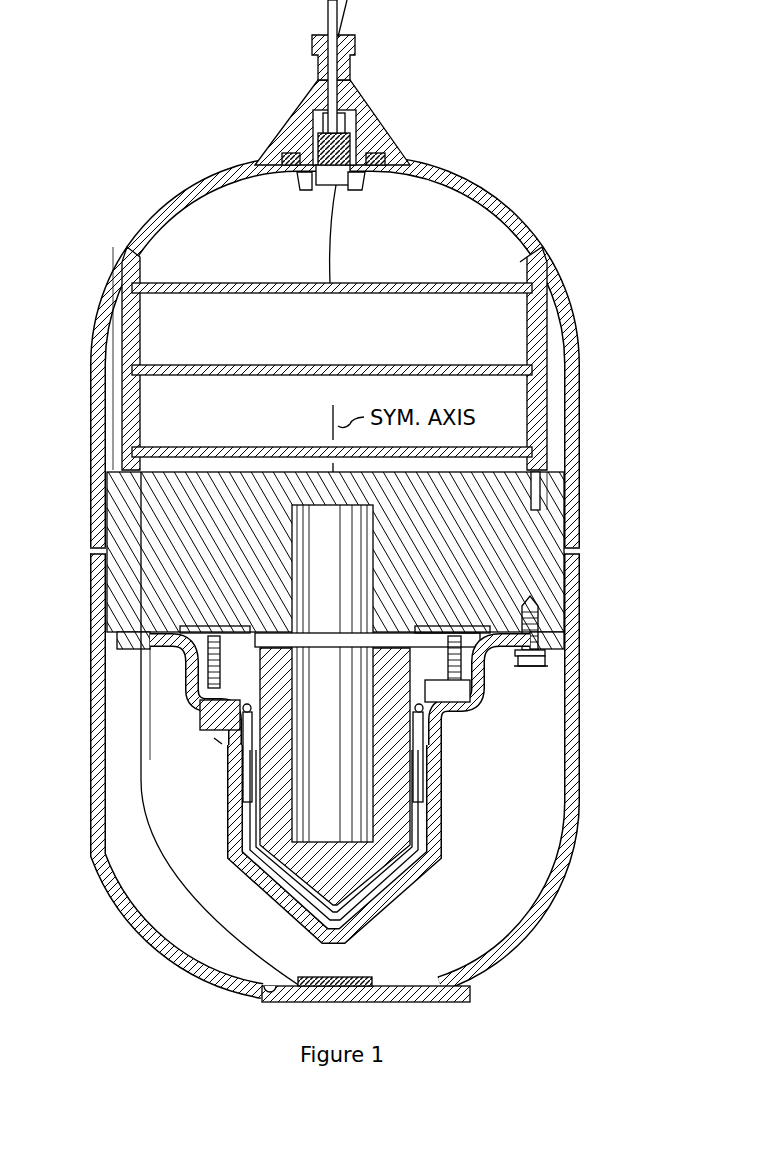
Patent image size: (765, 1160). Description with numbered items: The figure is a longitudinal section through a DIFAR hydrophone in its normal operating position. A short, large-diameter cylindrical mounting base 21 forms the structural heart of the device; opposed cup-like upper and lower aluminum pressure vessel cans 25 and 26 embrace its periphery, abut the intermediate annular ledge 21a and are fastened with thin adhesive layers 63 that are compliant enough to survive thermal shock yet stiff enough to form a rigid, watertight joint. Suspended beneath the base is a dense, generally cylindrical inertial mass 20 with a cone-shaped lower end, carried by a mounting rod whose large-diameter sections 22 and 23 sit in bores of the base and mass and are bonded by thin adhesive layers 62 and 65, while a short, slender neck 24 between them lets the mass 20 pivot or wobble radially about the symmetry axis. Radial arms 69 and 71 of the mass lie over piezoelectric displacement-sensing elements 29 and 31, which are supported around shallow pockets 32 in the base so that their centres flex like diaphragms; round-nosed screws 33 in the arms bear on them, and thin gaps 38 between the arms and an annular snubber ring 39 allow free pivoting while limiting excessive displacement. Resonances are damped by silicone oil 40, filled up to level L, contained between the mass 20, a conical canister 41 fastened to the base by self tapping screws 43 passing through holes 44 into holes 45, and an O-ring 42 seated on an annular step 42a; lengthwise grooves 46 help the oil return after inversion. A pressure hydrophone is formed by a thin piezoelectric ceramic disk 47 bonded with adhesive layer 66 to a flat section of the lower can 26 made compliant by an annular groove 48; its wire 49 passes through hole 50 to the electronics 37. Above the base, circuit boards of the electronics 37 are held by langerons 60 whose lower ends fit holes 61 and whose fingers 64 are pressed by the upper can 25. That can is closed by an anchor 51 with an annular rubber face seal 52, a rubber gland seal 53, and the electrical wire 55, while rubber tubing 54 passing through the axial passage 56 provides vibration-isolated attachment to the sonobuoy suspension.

The inertial mass 20 is at (402, 812).
The mounting base 21 is at (547, 532).
The intermediate annular ledge 21a is at (582, 553).
The rod section 22 is at (300, 546).
The rod section 23 is at (300, 760).
The neck 24 is at (210, 645).
The upper pressure vessel can 25 is at (576, 410).
The lower pressure vessel can 26 is at (576, 762).
The displacement-sensing element 29 is at (455, 636).
The displacement-sensing element 31 is at (162, 637).
The shallow pocket 32 is at (540, 610).
The round-nosed screw 33 is at (476, 700).
The electronics 37 is at (140, 378).
The thin gap 38 is at (204, 720).
The annular snubber ring 39 is at (190, 628).
The viscous liquid 40 is at (428, 852).
The canister 41 is at (392, 896).
The O-ring 42 is at (440, 745).
The annular step 42a is at (440, 726).
The self tapping screw 43 is at (550, 668).
The hole 44 is at (548, 662).
The hole 45 is at (546, 650).
The groove 46 is at (256, 810).
The piezoelectric ceramic disk 47 is at (376, 977).
The annular groove 48 is at (266, 999).
The wire 49 is at (182, 864).
The hole 50 is at (140, 515).
The anchor 51 is at (372, 112).
The annular rubber face seal 52 is at (380, 160).
The rubber gland seal 53 is at (290, 146).
The rubber tubing 54 is at (328, 16).
The electrical wire 55 is at (350, 10).
The axial passage 56 is at (318, 78).
The langeron 60 is at (545, 336).
The hole 61 is at (545, 492).
The thin adhesive layer 62 is at (282, 520).
The thin adhesive layer 63 is at (566, 504).
The langeron finger 64 is at (556, 262).
The thin adhesive layer 65 is at (265, 836).
The thin adhesive layer 66 is at (388, 1003).
The radial arm 69 is at (470, 676).
The radial arm 71 is at (182, 680).
The oil level L is at (218, 740).